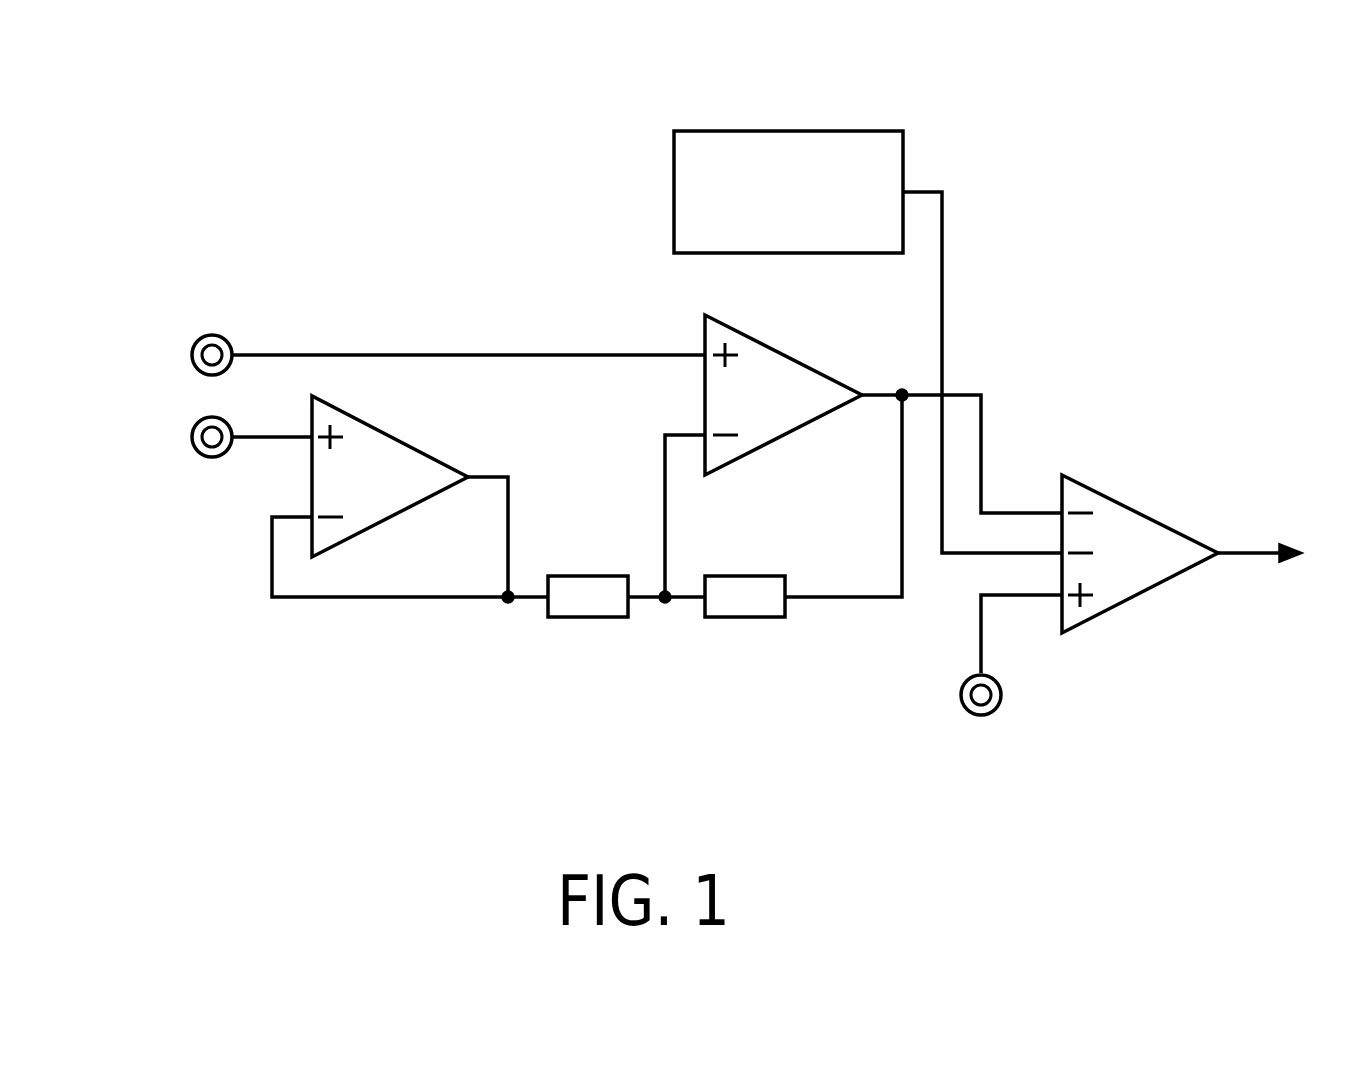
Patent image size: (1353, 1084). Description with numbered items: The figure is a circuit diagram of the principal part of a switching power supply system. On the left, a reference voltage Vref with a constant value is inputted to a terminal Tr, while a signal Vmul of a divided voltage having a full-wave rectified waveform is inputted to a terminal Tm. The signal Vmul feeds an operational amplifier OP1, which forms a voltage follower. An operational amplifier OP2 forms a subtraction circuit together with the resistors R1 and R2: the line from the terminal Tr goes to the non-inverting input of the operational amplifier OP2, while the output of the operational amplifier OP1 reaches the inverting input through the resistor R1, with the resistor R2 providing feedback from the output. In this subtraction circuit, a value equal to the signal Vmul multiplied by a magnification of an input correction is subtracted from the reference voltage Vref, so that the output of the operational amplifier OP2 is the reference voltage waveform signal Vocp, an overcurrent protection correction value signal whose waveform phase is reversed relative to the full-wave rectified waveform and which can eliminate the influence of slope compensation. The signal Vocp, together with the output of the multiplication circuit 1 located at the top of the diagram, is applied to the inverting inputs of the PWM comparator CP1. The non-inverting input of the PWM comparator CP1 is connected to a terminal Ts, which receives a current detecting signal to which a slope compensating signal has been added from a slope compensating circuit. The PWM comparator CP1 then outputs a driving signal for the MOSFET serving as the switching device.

The multiplication circuit 1 is at (823, 131).
The operational amplifier OP1 is at (395, 437).
The operational amplifier OP2 is at (782, 355).
The PWM comparator CP1 is at (1145, 513).
The resistor R1 is at (567, 576).
The resistor R2 is at (728, 576).
The terminal Tr is at (215, 335).
The terminal Tm is at (212, 457).
The terminal Ts is at (1001, 695).
The reference voltage Vref is at (178, 388).
The signal Vmul is at (175, 480).
The voltage signal Vocp is at (1085, 433).